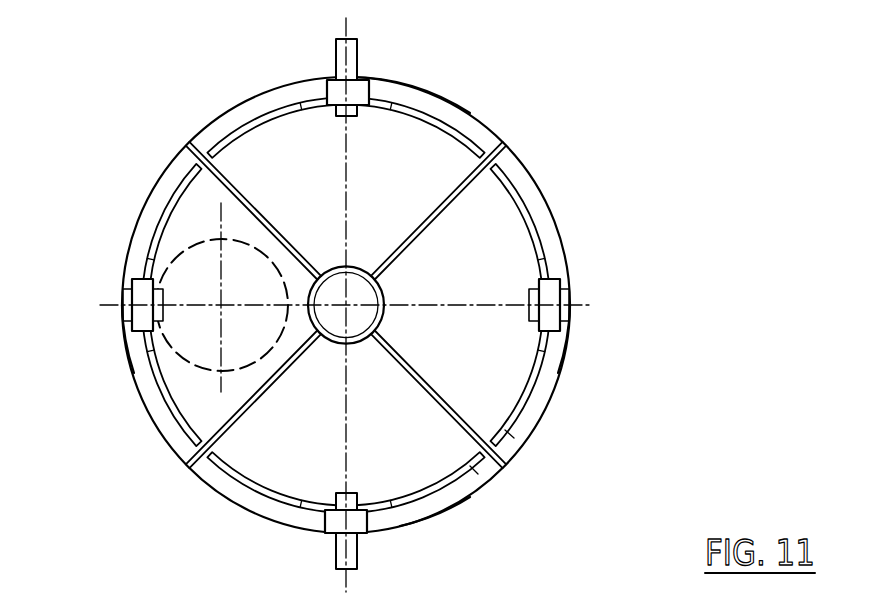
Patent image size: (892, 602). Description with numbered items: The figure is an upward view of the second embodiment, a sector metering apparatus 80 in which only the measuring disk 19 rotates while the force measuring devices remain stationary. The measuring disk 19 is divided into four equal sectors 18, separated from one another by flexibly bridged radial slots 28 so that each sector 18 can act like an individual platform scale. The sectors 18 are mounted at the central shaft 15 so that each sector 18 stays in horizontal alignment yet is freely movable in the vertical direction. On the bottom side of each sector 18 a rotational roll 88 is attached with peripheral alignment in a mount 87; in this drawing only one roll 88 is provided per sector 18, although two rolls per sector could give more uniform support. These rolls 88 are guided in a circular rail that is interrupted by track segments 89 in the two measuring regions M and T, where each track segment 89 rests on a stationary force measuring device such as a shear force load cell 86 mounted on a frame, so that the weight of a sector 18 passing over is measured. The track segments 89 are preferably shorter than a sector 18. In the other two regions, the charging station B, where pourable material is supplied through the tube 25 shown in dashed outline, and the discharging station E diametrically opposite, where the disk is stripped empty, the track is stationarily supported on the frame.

The shaft 15 is at (376, 294).
The sector 18 is at (226, 116).
The measuring disk 19 is at (558, 212).
The tube 25 is at (192, 237).
The radial slot 28 is at (205, 124).
The sector metering apparatus 80 is at (387, 302).
The load cell 86 is at (357, 50).
The mount 87 is at (572, 307).
The rotational roll 88 is at (328, 82).
The track segment 89 is at (472, 470).
The measuring region T is at (459, 80).
The charging station B is at (95, 359).
The disk discharging station E is at (600, 352).
The measuring region M is at (461, 528).